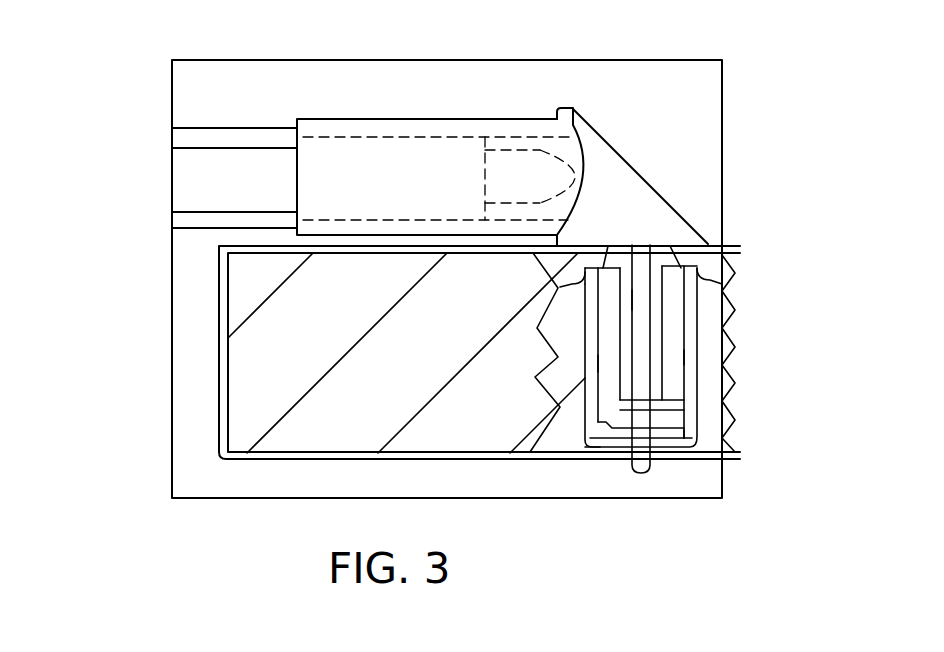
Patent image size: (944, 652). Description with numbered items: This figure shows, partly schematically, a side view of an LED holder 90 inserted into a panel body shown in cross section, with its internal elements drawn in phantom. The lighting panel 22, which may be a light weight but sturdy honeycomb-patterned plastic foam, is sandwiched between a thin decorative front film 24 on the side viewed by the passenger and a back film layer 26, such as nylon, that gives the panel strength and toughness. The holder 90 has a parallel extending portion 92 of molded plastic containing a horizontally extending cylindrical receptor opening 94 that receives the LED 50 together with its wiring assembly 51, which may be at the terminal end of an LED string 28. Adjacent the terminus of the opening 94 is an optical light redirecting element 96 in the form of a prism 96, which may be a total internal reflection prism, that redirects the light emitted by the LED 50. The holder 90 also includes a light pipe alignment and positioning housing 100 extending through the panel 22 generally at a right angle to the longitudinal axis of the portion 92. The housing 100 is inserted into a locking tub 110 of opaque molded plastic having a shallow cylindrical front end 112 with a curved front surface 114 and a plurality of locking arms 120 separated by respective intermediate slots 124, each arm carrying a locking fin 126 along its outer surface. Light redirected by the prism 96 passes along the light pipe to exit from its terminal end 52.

The lighting panel 22 is at (248, 419).
The front film 24 is at (333, 452).
The back film layer 26 is at (352, 258).
The LED string 28 is at (203, 147).
The LED 50 is at (540, 178).
The wiring assembly 51 is at (378, 185).
The terminal end of the light pipe 52 is at (645, 470).
The LED holder 90 is at (668, 143).
The parallel extending portion 92 is at (530, 82).
The receptor opening 94 is at (523, 205).
The optical light redirecting element 96 is at (663, 220).
The light pipe alignment and positioning housing 100 is at (640, 337).
The locking tub 110 is at (703, 392).
The shallow cylindrical front end 112 is at (592, 450).
The curved front surface 114 is at (693, 440).
The locking arms 120 is at (607, 363).
The intermediate slots 124 is at (645, 300).
The locking fin 126 is at (558, 292).